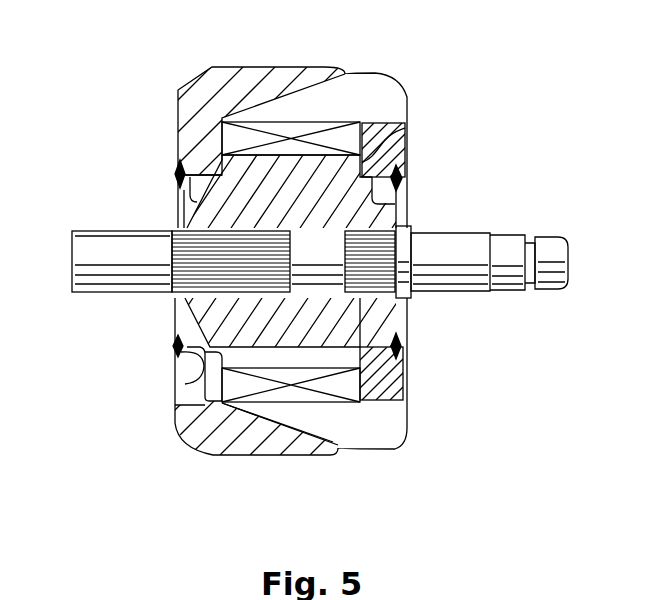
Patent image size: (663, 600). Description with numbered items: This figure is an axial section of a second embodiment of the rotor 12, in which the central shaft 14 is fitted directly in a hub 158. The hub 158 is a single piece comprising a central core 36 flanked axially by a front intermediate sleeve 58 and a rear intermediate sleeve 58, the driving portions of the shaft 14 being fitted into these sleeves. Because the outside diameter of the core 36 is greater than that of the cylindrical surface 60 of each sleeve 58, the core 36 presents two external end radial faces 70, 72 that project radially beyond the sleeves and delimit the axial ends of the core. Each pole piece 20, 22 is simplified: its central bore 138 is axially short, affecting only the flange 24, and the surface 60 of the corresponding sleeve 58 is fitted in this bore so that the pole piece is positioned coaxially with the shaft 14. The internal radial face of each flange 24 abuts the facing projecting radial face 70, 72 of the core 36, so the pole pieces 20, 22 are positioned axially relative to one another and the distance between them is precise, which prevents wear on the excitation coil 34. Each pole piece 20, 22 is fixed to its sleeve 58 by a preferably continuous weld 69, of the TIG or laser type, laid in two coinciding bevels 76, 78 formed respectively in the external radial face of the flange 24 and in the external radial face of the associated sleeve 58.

The rotor 12 is at (448, 101).
The central shaft 14 is at (98, 224).
The pole piece 20 is at (172, 112).
The pole piece 22 is at (410, 352).
The flange 24 is at (190, 142).
The excitation coil 34 is at (343, 132).
The central core 36 is at (278, 340).
The intermediate sleeve 58 is at (197, 323).
The cylindrical surface 60 is at (225, 450).
The weld 69 is at (410, 176).
The external end radial face 70 is at (205, 403).
The external end radial face 72 is at (407, 133).
The bevel 76 is at (174, 345).
The bevel 78 is at (175, 350).
The central bore 138 is at (187, 203).
The hub 158 is at (246, 342).